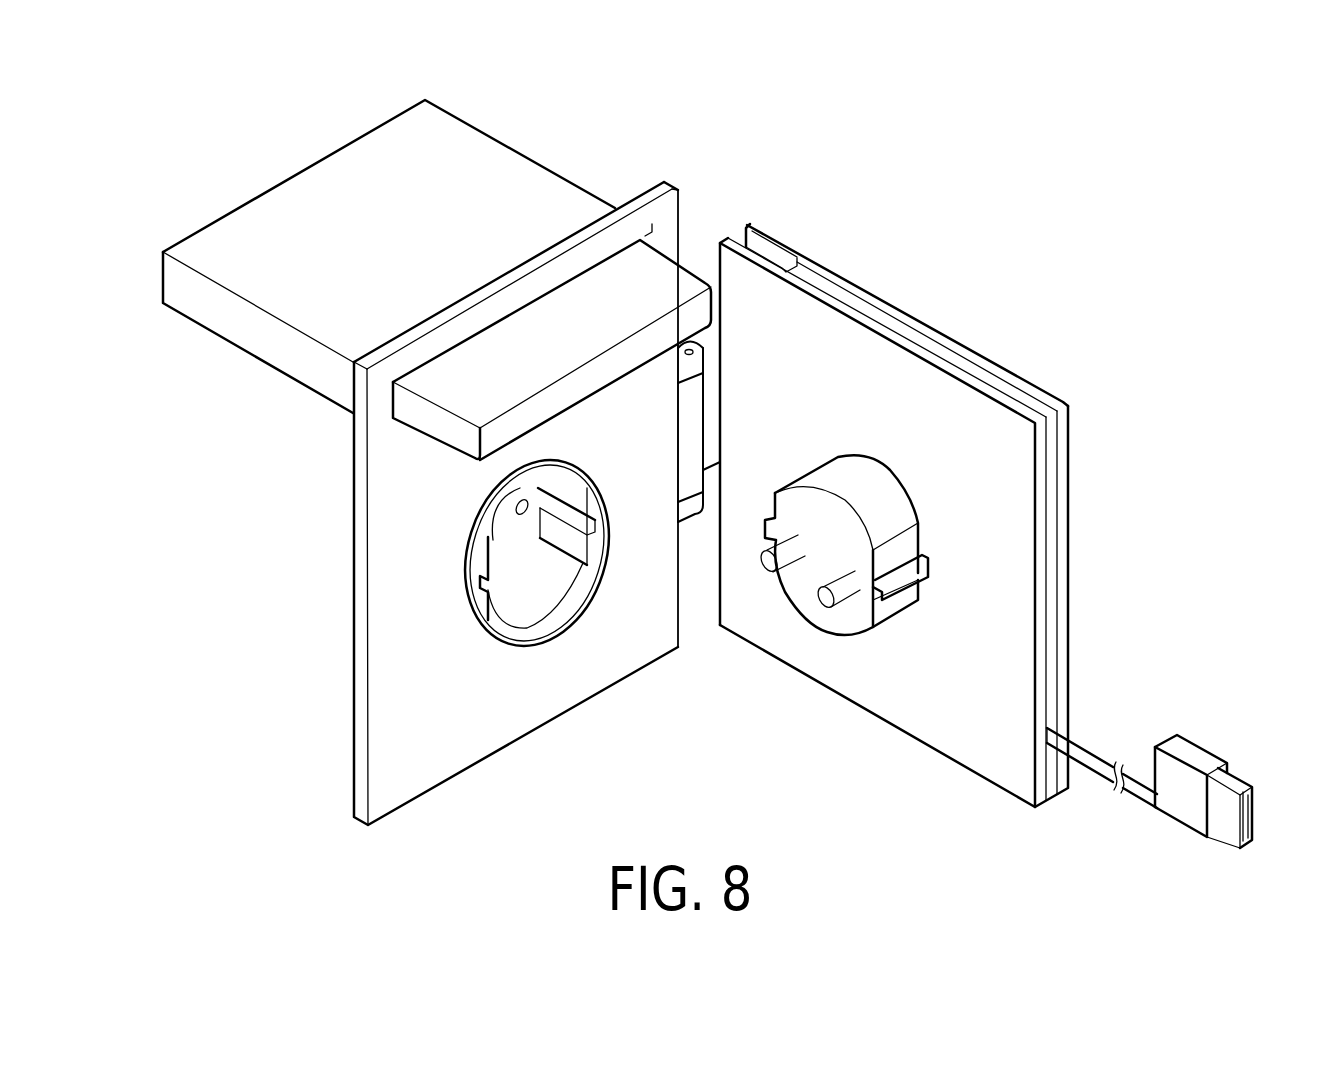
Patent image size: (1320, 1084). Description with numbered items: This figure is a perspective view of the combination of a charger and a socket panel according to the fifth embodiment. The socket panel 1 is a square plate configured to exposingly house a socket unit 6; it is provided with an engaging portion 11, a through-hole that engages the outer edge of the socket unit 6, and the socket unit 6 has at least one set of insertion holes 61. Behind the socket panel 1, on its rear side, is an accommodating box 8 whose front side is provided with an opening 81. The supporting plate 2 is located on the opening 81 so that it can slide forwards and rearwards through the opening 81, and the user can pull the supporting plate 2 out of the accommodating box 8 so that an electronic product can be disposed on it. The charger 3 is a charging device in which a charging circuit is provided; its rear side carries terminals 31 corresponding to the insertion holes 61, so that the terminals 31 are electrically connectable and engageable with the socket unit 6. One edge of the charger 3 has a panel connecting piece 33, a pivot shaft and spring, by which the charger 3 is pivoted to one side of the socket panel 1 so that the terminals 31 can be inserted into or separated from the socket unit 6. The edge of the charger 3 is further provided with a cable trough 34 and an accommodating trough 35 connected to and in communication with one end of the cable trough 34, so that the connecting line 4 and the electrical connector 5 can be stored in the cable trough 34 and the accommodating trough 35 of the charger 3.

The socket panel 1 is at (350, 578).
The accommodating box 8 is at (560, 172).
The opening 81 is at (655, 233).
The supporting plate 2 is at (635, 368).
The engaging portion 11 is at (490, 505).
The socket unit 6 is at (468, 624).
The insertion holes 61 is at (545, 595).
The panel connecting piece 33 is at (694, 412).
The charger 3 is at (900, 307).
The cable trough 34 is at (1025, 397).
The accommodating trough 35 is at (772, 252).
The terminals 31 is at (843, 592).
The connecting line 4 is at (1103, 753).
The electrical connector 5 is at (1204, 742).